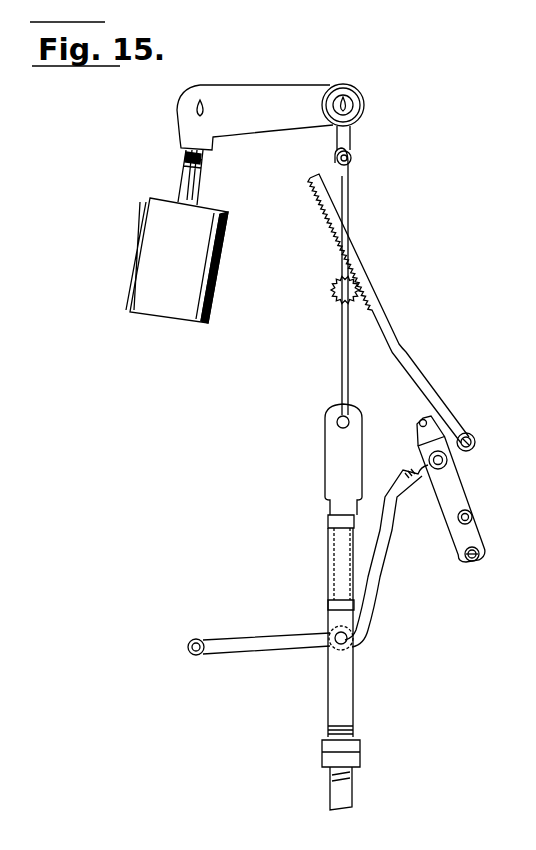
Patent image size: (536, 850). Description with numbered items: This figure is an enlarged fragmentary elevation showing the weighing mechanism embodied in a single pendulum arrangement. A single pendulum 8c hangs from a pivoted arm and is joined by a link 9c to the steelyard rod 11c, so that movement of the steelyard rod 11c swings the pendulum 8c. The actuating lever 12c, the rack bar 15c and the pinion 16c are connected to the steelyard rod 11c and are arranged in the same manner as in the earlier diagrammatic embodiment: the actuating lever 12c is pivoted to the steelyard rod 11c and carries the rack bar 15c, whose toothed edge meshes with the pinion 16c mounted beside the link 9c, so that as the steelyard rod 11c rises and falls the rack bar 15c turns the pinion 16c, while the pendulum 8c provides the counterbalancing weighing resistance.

The single pendulum 8c is at (245, 90).
The link 9c is at (349, 189).
The steelyard rod 11c is at (343, 693).
The actuating lever 12c is at (374, 583).
The rack bar 15c is at (400, 354).
The pinion 16c is at (332, 293).